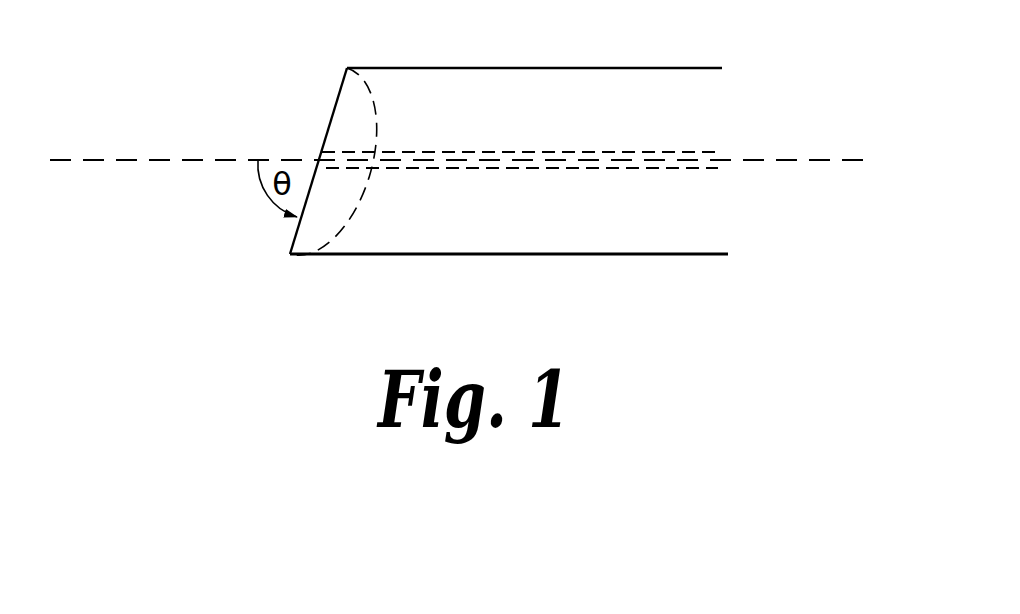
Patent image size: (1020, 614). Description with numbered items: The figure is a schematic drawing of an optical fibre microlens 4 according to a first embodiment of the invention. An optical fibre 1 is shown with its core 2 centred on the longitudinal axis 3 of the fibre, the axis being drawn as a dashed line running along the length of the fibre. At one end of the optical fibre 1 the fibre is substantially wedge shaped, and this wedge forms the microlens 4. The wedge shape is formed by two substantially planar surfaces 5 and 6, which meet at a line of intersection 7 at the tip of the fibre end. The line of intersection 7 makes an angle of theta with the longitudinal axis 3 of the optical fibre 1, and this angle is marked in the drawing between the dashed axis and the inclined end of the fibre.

The optical fibre 1 is at (685, 85).
The core 2 is at (696, 172).
The longitudinal axis 3 is at (98, 160).
The optical fibre microlens 4 is at (311, 273).
The planar surface 5 is at (347, 113).
The planar surface 6 is at (351, 136).
The line of intersection 7 is at (286, 238).